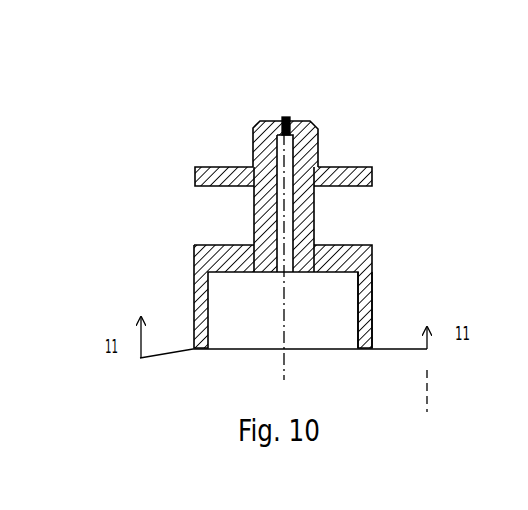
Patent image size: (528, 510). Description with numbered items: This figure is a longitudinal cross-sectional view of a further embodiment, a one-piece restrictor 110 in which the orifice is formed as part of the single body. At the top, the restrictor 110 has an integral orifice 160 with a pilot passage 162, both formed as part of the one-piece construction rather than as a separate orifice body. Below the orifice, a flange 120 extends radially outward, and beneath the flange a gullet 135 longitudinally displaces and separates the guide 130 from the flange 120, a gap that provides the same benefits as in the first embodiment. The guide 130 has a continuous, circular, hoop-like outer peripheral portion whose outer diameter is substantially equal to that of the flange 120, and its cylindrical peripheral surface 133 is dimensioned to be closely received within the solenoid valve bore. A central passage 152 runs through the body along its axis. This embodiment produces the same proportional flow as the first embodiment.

The restrictor 110 is at (172, 160).
The integral orifice 160 is at (315, 122).
The pilot passage 162 is at (284, 114).
The flange 120 is at (365, 167).
The gullet 135 is at (348, 213).
The bore 152 is at (277, 207).
The guide 130 is at (365, 300).
The peripheral surface 133 is at (368, 327).